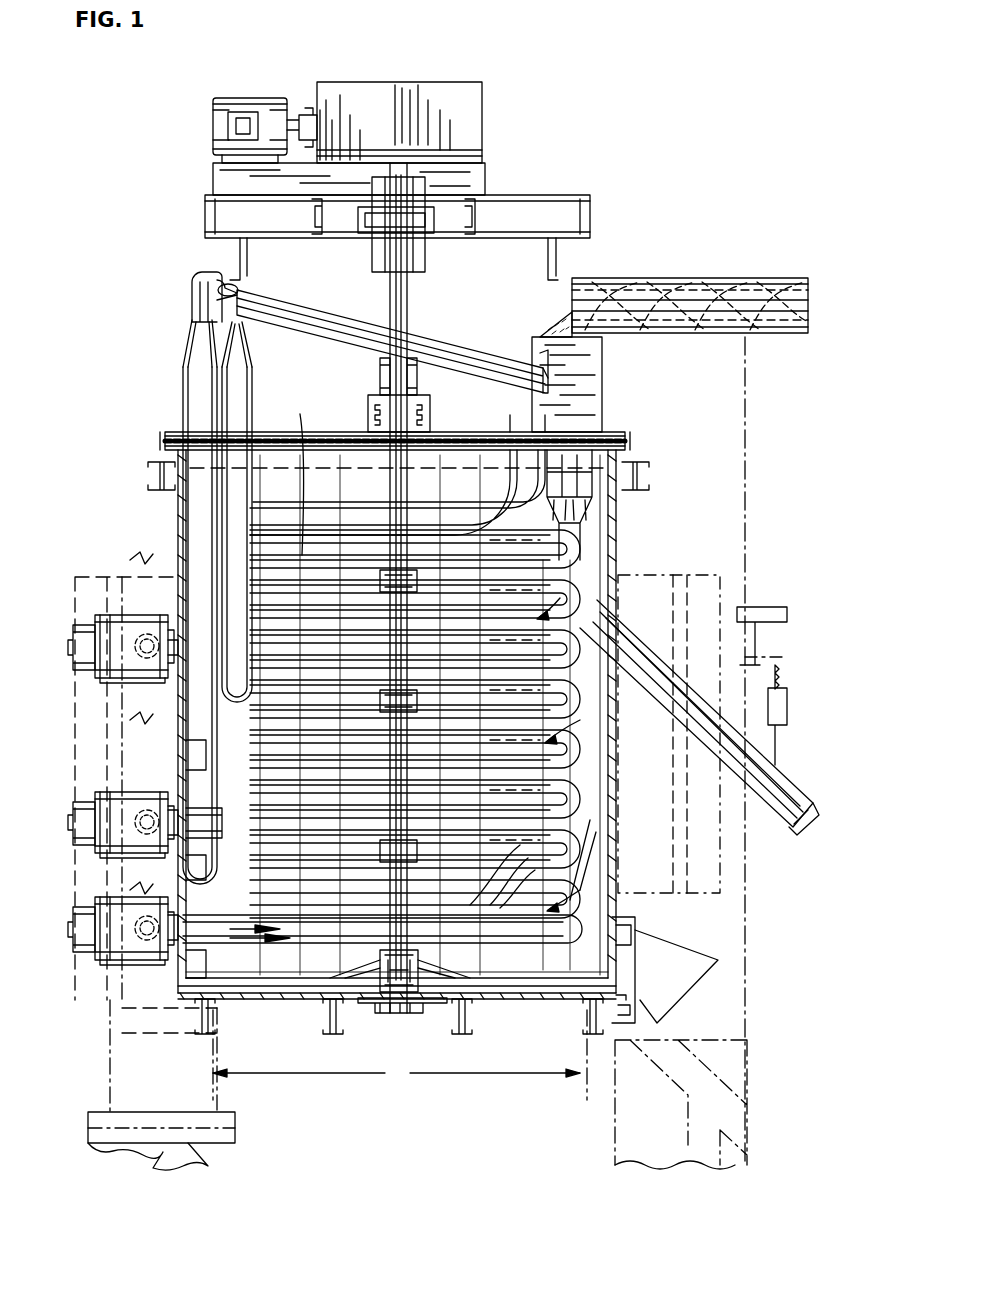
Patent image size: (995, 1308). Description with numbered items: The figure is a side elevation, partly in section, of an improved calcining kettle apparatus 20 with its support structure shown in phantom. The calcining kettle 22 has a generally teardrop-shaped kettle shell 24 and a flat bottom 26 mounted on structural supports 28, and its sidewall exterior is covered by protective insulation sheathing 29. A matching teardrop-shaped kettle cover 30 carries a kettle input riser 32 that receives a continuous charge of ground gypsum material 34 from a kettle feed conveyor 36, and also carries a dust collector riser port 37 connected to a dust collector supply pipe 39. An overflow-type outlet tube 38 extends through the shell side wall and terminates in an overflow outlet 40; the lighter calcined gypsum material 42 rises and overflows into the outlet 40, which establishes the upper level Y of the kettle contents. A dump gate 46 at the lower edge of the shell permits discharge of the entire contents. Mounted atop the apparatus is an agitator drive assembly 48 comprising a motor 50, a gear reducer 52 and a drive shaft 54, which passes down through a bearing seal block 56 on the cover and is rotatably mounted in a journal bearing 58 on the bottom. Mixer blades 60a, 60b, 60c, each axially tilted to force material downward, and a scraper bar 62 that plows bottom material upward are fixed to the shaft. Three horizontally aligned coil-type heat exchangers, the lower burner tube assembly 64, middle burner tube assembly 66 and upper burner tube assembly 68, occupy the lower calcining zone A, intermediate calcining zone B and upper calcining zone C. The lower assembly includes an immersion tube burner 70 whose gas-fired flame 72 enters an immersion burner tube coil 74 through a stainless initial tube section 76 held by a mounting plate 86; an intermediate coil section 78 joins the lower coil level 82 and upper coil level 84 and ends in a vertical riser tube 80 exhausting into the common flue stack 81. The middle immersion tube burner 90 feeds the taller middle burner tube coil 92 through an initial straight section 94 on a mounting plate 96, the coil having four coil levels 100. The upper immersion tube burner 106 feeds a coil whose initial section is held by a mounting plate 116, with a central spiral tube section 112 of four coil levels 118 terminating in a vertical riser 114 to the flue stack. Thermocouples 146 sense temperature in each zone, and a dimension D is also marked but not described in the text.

The calcining kettle apparatus 20 is at (704, 380).
The calcining kettle 22 is at (180, 973).
The kettle shell 24 is at (620, 858).
The flat bottom 26 is at (305, 1000).
The structural supports 28 is at (338, 1022).
The sheathing 29 is at (615, 520).
The kettle cover 30 is at (481, 475).
The kettle input riser 32 is at (592, 342).
The ground gypsum material 34 is at (548, 315).
The kettle feed conveyor 36 is at (625, 278).
The dust collector riser port 37 is at (430, 410).
The overflow-type outlet tube 38 is at (760, 792).
The dust collector supply pipe 39 is at (378, 385).
The overflow outlet 40 is at (595, 465).
The calcined gypsum material 42 is at (535, 440).
The dump gate 46 is at (685, 955).
The agitator drive assembly 48 is at (498, 132).
The motor 50 is at (242, 98).
The gear reducer 52 is at (362, 83).
The drive shaft 54 is at (408, 300).
The bearing seal block 56 is at (415, 400).
The journal bearing 58 is at (392, 1013).
The mixer blade 60a is at (580, 845).
The mixer blade 60b is at (595, 735).
The mixer blade 60c is at (575, 548).
The scraper bar 62 is at (545, 990).
The lower burner tube assembly 64 is at (622, 950).
The middle burner tube assembly 66 is at (200, 765).
The upper burner tube assembly 68 is at (207, 552).
The immersion tube burner 70 is at (110, 910).
The gas-fired flame 72 is at (225, 945).
The immersion burner tube coil 74 is at (515, 1003).
The initial tube section 76 is at (255, 945).
The intermediate coil section 78 is at (585, 858).
The vertical riser tube 80 is at (245, 390).
The common flue stack 81 is at (190, 300).
The lower coil level 82 is at (500, 964).
The upper coil level 84 is at (720, 870).
The mounting plate 86 is at (215, 960).
The middle immersion tube burner 90 is at (110, 815).
The middle burner tube coil 92 is at (183, 395).
The initial straight section 94 is at (215, 790).
The mounting plate 96 is at (200, 858).
The coil levels 100 is at (581, 704).
The upper immersion tube burner 106 is at (110, 625).
The central spiral tube section 112 is at (650, 625).
The vertical riser 114 is at (556, 392).
The mounting plate 116 is at (110, 678).
The coil levels 118 is at (268, 510).
The thermocouples 146 is at (210, 555).
The lower calcining zone A is at (630, 905).
The intermediate calcining zone B is at (605, 765).
The upper calcining zone C is at (593, 610).
The vessel diameter D is at (400, 1055).
The upper level Y is at (331, 468).